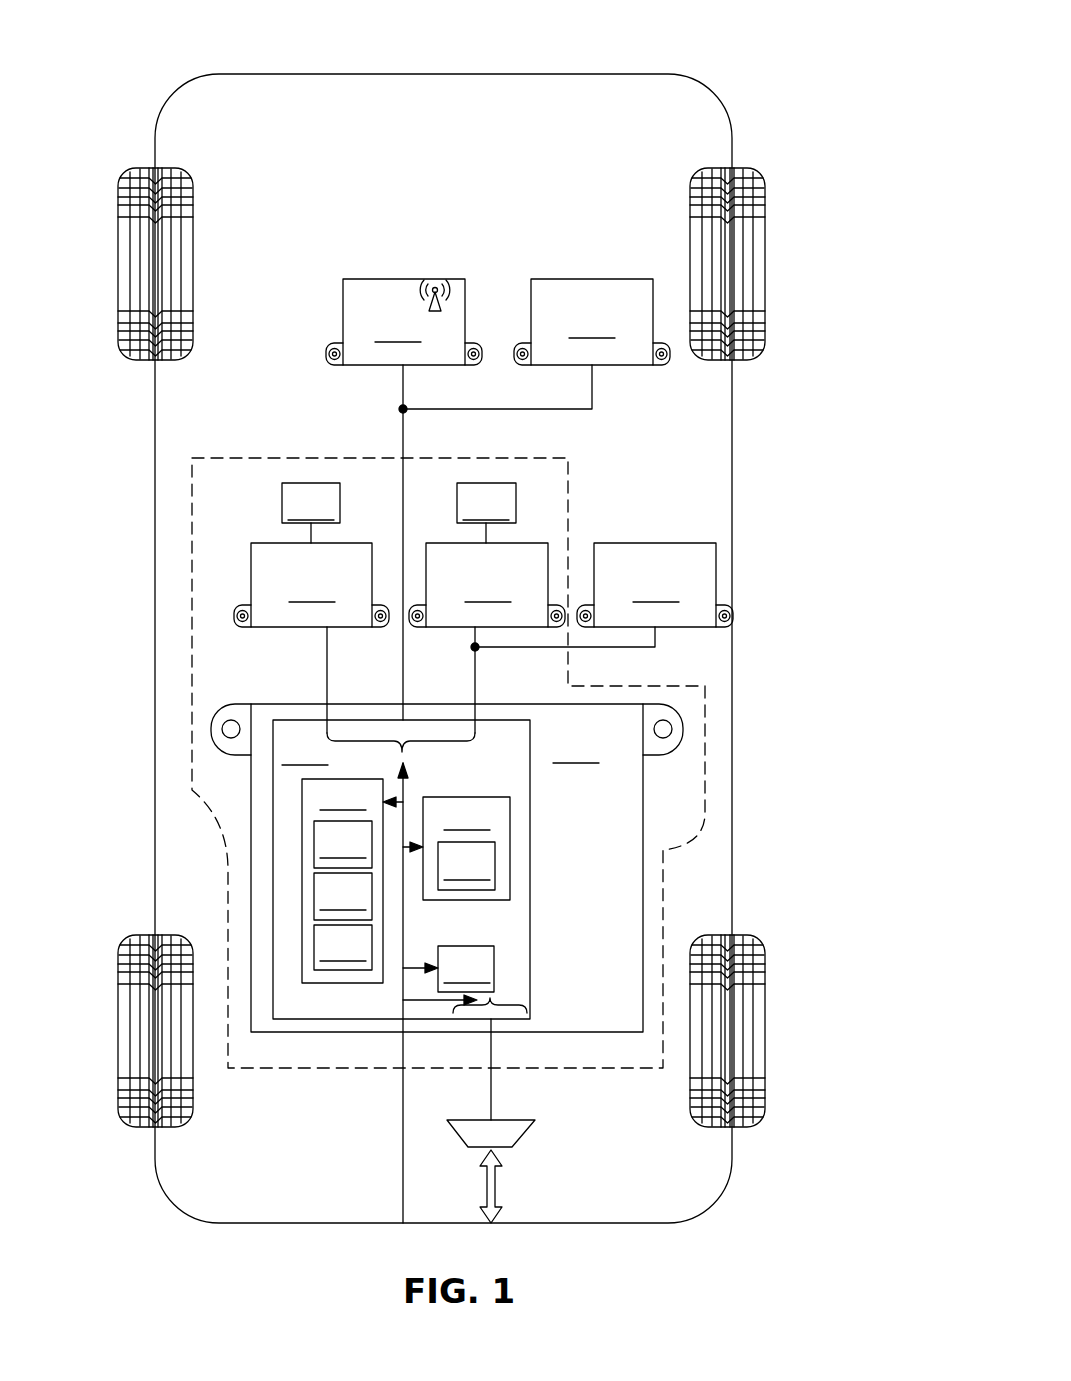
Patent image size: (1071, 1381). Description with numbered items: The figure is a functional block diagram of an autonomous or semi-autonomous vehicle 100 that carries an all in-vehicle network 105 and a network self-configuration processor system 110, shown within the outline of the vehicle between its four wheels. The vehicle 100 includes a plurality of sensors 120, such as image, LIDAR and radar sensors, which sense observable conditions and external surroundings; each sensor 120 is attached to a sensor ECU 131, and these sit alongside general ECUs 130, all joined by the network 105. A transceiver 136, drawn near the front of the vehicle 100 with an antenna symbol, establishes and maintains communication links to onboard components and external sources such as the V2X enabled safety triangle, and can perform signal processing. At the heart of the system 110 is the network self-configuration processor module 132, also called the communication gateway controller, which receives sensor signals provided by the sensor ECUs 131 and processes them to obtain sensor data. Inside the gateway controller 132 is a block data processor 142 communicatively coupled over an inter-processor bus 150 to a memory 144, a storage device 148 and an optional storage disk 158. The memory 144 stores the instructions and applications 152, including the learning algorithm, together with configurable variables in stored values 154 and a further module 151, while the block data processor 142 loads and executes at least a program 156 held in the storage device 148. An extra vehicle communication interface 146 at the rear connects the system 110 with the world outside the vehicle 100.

The vehicle 100 is at (742, 40).
The network 105 is at (475, 690).
The network self-configuration processor system 110 is at (547, 458).
The sensors 120 is at (307, 483).
The general ECUs 130 is at (668, 702).
The sensor ECUs 131 is at (350, 543).
The network self-configuration processor module 132 is at (613, 762).
The transceiver 136 is at (415, 279).
The block data processor 142 is at (530, 833).
The memory 144 is at (355, 972).
The extra vehicle communication interface 146 is at (523, 1130).
The storage device 148 is at (466, 848).
The inter-processor bus 150 is at (417, 1000).
The software module 151 is at (314, 844).
The instructions and applications 152 is at (314, 897).
The stored values 154 is at (343, 947).
The program 156 is at (466, 866).
The optional storage disk 158 is at (466, 969).